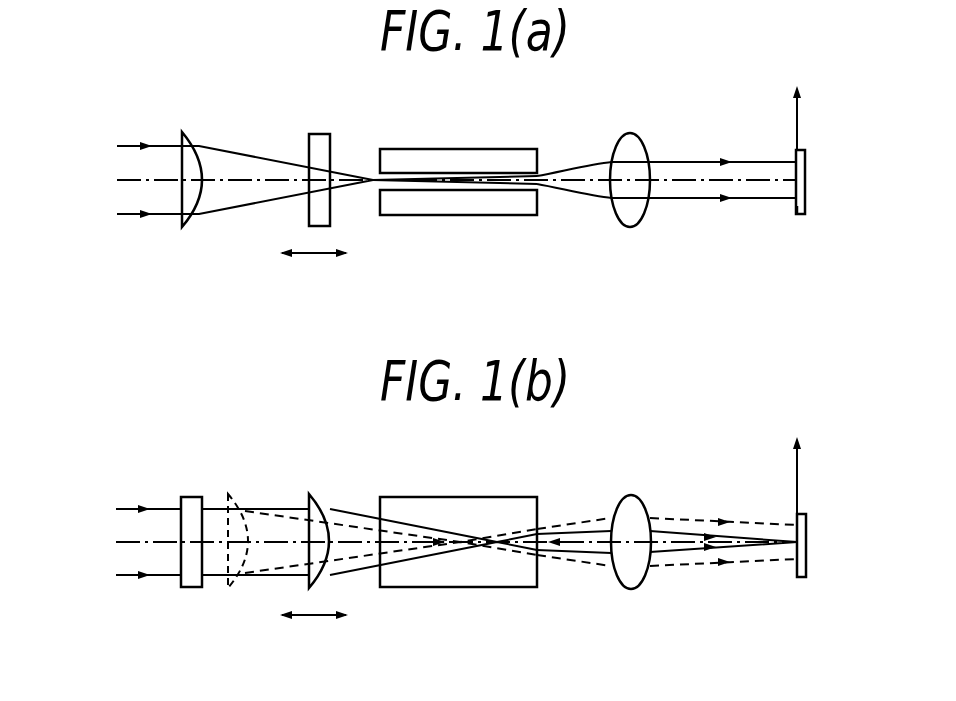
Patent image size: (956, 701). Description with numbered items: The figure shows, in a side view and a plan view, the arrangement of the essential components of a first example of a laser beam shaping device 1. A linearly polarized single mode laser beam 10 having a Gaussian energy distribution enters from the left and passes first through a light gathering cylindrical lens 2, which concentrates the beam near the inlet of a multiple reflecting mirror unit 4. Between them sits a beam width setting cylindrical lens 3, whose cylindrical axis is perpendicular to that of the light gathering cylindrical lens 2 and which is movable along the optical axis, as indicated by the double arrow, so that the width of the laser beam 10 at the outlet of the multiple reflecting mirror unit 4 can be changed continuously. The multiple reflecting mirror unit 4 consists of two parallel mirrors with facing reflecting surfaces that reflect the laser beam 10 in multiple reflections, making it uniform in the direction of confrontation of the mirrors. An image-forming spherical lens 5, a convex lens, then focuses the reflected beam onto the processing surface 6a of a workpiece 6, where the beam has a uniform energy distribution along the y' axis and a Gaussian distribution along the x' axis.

In FIG. 1A, the laser beam shaping device 1 is at (519, 140).
In FIG. 1B, the laser beam shaping device 1 is at (515, 486).
In FIG. 1A, the light gathering cylindrical lens 2 is at (187, 131).
In FIG. 1B, the light gathering cylindrical lens 2 is at (193, 497).
In FIG. 1A, the beam width setting cylindrical lens 3 is at (320, 134).
In FIG. 1B, the beam width setting cylindrical lens 3 is at (318, 494).
In FIG. 1A, the multiple reflecting mirror unit 4 is at (399, 148).
In FIG. 1B, the multiple reflecting mirror unit 4 is at (399, 497).
In FIG. 1A, the image-forming spherical lens 5 is at (630, 133).
In FIG. 1B, the image-forming spherical lens 5 is at (633, 497).
In FIG. 1A, the workpiece 6 is at (806, 150).
In FIG. 1B, the workpiece 6 is at (807, 514).
In FIG. 1A, the processing surface 6a is at (800, 214).
In FIG. 1A, the laser beam 10 is at (128, 214).
In FIG. 1B, the laser beam 10 is at (126, 508).